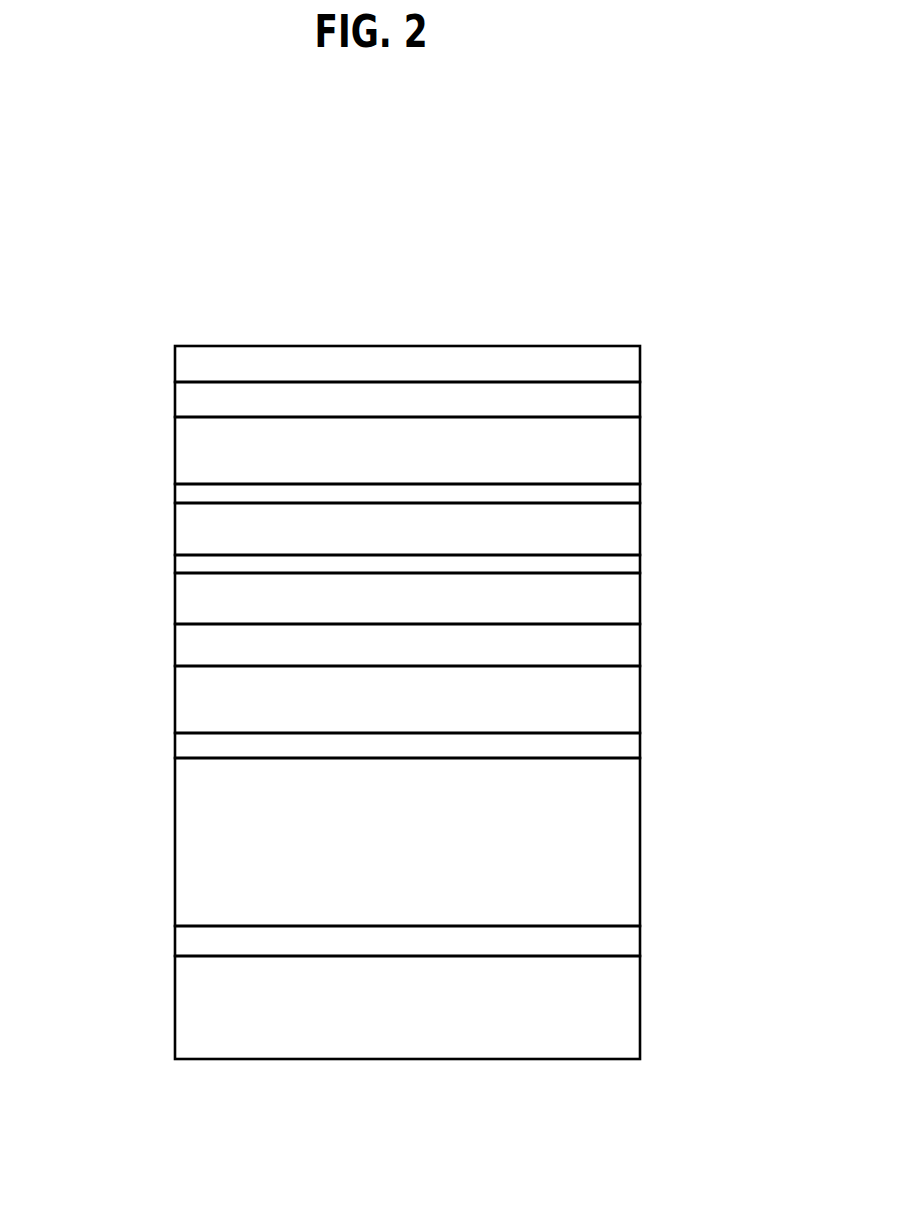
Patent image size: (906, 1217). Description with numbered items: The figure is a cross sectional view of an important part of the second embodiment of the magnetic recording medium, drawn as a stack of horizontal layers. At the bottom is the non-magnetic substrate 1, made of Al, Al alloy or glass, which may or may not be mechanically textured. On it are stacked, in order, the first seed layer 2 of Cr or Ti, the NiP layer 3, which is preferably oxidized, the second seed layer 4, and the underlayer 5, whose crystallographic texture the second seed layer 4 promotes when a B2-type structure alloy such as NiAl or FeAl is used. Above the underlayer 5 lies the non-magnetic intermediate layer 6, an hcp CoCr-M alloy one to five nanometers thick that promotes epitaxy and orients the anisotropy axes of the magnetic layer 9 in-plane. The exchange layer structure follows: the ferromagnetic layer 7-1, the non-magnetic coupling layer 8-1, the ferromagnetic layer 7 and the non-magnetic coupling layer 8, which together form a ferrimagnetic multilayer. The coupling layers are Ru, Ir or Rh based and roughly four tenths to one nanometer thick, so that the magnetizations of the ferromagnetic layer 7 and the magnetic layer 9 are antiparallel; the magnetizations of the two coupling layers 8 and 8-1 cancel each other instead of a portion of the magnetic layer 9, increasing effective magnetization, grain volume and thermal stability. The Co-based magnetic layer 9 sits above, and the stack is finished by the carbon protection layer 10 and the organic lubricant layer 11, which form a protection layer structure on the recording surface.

The non-magnetic substrate 1 is at (630, 1012).
The first seed layer 2 is at (653, 944).
The NiP layer 3 is at (653, 844).
The second seed layer 4 is at (653, 747).
The underlayer 5 is at (653, 701).
The non-magnetic intermediate layer 6 is at (653, 647).
The ferromagnetic layer 7 is at (162, 532).
The ferromagnetic layer 7-1 is at (162, 600).
The non-magnetic coupling layer 8 is at (162, 497).
The non-magnetic coupling layer 8-1 is at (162, 565).
The magnetic layer 9 is at (653, 452).
The protection layer 10 is at (653, 401).
The lubricant layer 11 is at (653, 368).